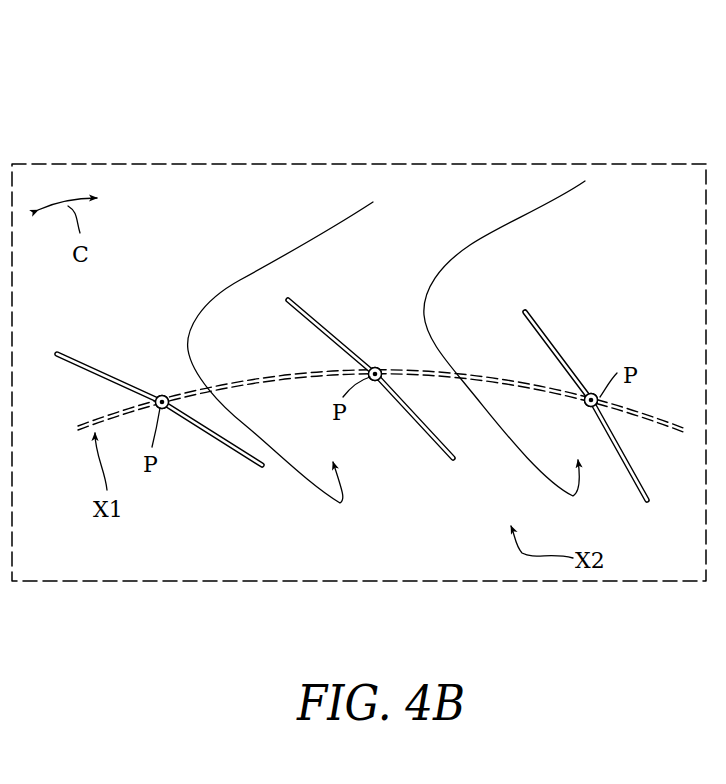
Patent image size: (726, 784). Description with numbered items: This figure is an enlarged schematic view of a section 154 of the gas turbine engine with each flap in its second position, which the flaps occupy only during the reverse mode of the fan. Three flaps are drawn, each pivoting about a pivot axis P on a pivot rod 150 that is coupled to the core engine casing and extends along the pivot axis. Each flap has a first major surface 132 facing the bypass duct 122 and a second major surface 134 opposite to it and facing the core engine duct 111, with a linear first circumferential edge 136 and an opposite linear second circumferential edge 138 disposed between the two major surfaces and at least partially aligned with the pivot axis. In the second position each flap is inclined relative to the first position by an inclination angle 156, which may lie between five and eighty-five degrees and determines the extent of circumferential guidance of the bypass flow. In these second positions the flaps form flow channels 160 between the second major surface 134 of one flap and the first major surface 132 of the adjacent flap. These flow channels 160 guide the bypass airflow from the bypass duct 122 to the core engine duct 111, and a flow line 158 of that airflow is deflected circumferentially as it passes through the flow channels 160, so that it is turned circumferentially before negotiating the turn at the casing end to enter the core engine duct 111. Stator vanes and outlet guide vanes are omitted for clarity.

The core engine duct 111 is at (205, 553).
The bypass duct 122 is at (205, 197).
The first major surface 132 is at (97, 370).
The second major surface 134 is at (72, 365).
The first circumferential edge 136 is at (55, 352).
The second circumferential edge 138 is at (262, 467).
The pivot rod 150 is at (168, 408).
The section 154 is at (628, 105).
The inclination angle 156 is at (660, 430).
The flow line 158 is at (268, 260).
The flow channel 160 is at (228, 338).